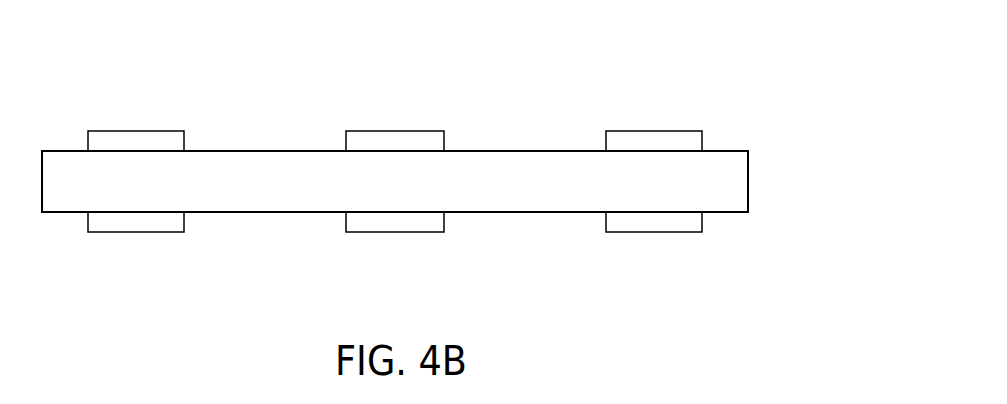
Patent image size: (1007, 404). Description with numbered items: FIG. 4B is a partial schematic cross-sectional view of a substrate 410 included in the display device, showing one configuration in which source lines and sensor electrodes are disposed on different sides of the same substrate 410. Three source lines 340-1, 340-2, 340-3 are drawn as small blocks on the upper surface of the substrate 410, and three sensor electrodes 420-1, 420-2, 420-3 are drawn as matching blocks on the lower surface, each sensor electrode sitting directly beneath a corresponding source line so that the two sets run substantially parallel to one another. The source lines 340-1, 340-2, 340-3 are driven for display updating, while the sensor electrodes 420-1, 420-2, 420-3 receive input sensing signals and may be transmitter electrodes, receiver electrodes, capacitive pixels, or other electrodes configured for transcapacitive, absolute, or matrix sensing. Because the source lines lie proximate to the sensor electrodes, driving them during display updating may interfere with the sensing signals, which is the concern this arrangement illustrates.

The substrate 410 is at (748, 171).
The source line 340-1 is at (134, 131).
The source line 340-2 is at (394, 131).
The source line 340-3 is at (647, 131).
The sensor electrode 420-1 is at (134, 232).
The sensor electrode 420-2 is at (394, 232).
The sensor electrode 420-3 is at (647, 232).